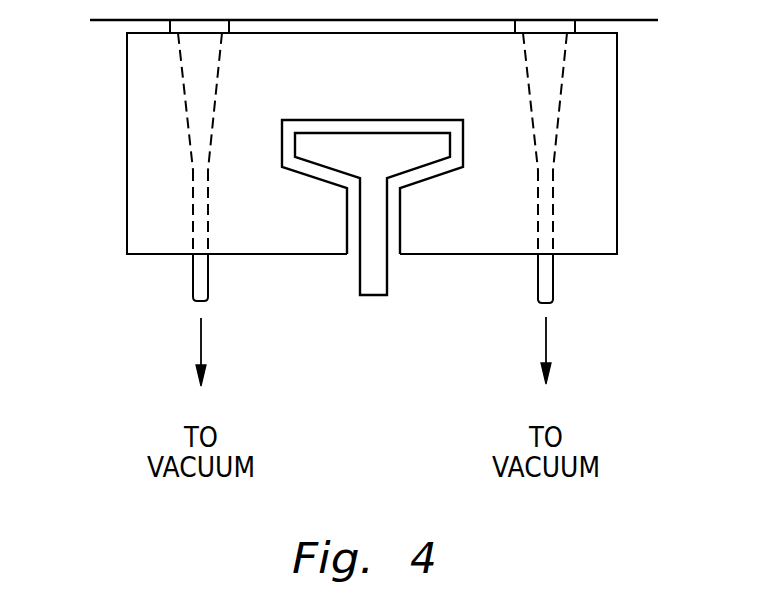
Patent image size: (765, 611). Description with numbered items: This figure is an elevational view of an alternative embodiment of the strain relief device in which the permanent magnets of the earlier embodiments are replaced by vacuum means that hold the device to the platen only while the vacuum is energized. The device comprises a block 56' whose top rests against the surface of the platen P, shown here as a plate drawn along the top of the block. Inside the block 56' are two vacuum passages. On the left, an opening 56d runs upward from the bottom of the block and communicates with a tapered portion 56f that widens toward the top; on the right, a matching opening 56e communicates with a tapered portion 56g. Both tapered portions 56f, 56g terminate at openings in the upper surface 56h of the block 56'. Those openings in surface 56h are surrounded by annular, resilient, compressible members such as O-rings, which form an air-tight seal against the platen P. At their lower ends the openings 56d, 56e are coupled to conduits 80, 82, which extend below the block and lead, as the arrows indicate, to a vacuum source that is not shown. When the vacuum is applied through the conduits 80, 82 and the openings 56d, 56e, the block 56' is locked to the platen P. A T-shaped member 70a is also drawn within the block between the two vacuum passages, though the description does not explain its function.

The platen P is at (113, 21).
The block 56' is at (372, 178).
The opening 56d is at (193, 208).
The opening 56e is at (553, 205).
The tapered portion 56f is at (185, 95).
The tapered portion 56g is at (557, 93).
The upper surface 56h is at (608, 33).
The T-shaped insert 70a is at (358, 280).
The conduit 80 is at (193, 290).
The conduit 82 is at (553, 292).